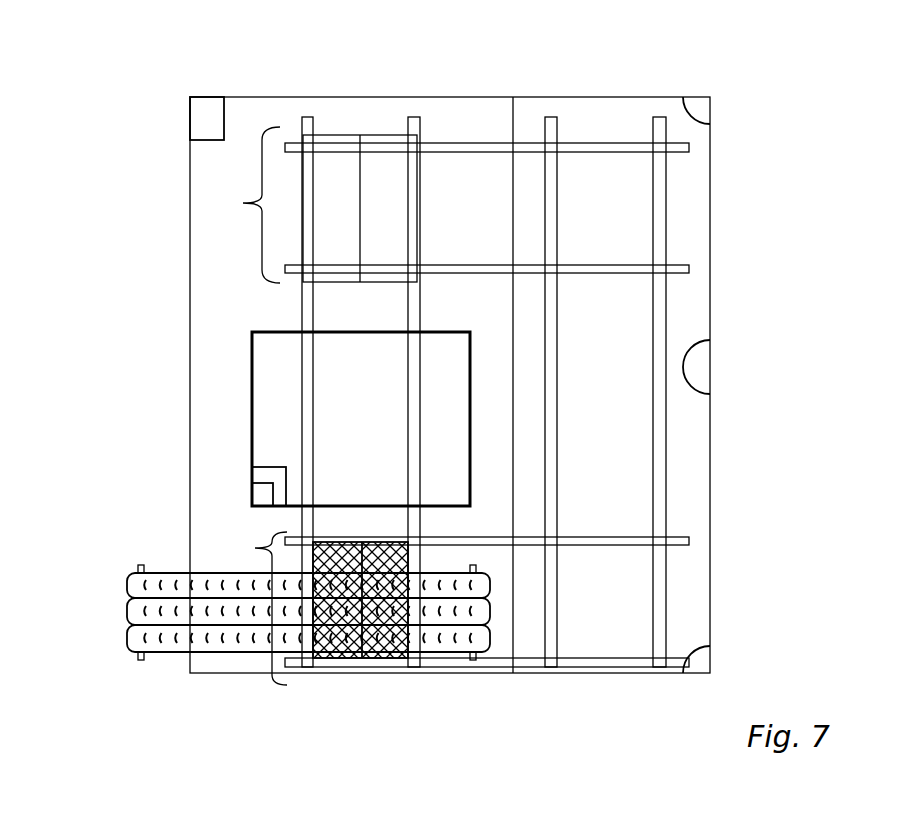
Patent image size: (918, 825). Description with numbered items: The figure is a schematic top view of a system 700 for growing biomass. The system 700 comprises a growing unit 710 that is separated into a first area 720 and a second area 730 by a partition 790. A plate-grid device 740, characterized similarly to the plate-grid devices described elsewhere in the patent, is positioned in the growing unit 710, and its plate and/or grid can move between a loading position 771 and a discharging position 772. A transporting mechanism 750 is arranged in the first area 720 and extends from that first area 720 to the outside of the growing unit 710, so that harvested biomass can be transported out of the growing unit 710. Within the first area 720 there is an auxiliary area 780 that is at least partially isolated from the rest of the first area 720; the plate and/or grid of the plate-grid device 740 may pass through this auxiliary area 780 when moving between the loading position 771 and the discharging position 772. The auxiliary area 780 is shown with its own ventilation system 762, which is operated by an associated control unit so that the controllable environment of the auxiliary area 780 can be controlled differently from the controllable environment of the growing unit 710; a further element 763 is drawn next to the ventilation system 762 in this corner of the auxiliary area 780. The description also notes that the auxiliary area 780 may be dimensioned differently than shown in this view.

The system for growing biomass 700 is at (450, 383).
The growing unit 710 is at (187, 315).
The first area 720 is at (260, 418).
The second area 730 is at (690, 462).
The plate-grid device 740 is at (660, 282).
The transporting mechanism 750 is at (213, 640).
The ventilation system 762 is at (268, 473).
The sensor 763 is at (258, 493).
The loading position 771 is at (237, 205).
The discharging position 772 is at (245, 548).
The auxiliary area 780 is at (272, 397).
The partition 790 is at (512, 97).